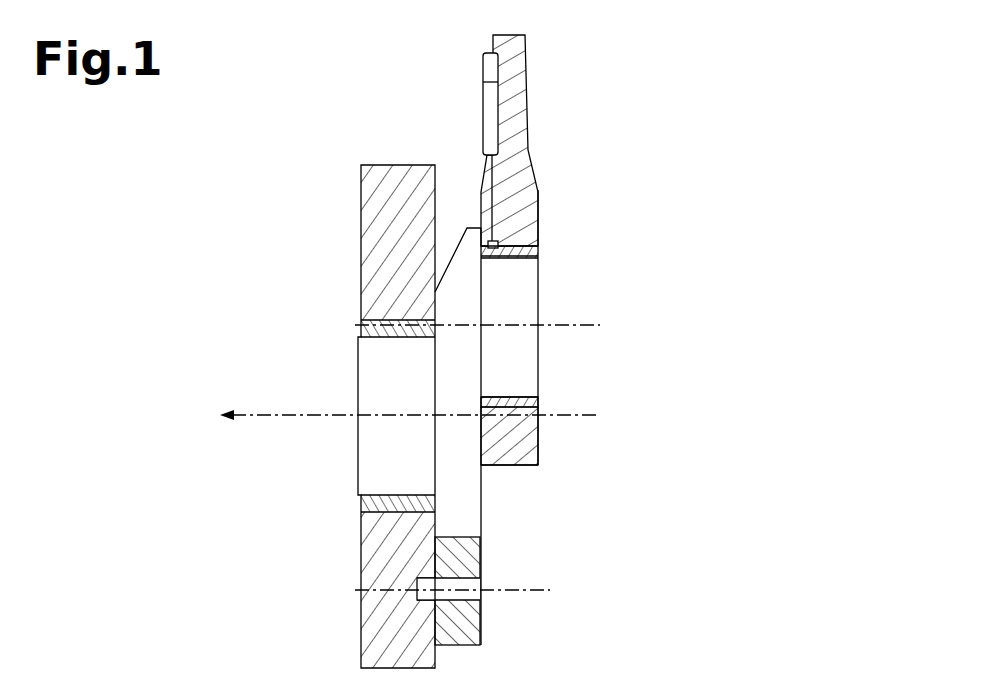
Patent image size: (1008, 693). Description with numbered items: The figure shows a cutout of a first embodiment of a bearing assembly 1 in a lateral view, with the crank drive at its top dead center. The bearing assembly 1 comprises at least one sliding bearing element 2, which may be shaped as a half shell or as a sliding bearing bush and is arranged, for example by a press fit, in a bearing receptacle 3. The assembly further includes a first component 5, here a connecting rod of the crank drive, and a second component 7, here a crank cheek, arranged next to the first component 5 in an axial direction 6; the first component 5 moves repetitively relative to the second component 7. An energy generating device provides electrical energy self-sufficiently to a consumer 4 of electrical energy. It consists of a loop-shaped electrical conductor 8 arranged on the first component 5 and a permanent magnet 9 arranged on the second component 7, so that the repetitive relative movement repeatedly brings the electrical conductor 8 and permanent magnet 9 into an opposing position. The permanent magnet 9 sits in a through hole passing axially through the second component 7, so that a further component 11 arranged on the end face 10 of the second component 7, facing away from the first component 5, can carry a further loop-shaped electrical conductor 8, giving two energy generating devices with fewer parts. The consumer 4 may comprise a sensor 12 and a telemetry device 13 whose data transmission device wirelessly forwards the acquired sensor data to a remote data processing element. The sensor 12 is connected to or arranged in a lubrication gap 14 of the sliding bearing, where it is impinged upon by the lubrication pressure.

The bearing assembly 1 is at (818, 83).
The sliding bearing element 2 is at (549, 243).
The bearing receptacle 3 is at (546, 233).
The consumer of electrical energy 4 is at (475, 120).
The first component 5 is at (555, 449).
The axial direction 6 is at (268, 413).
The second component 7 is at (483, 552).
The electrical conductor 8 is at (410, 598).
The permanent magnet 9 is at (490, 600).
The end face 10 is at (435, 298).
The further component 11 is at (361, 570).
The sensor 12 is at (503, 238).
The telemetry device 13 is at (500, 90).
The lubrication gap 14 is at (553, 256).